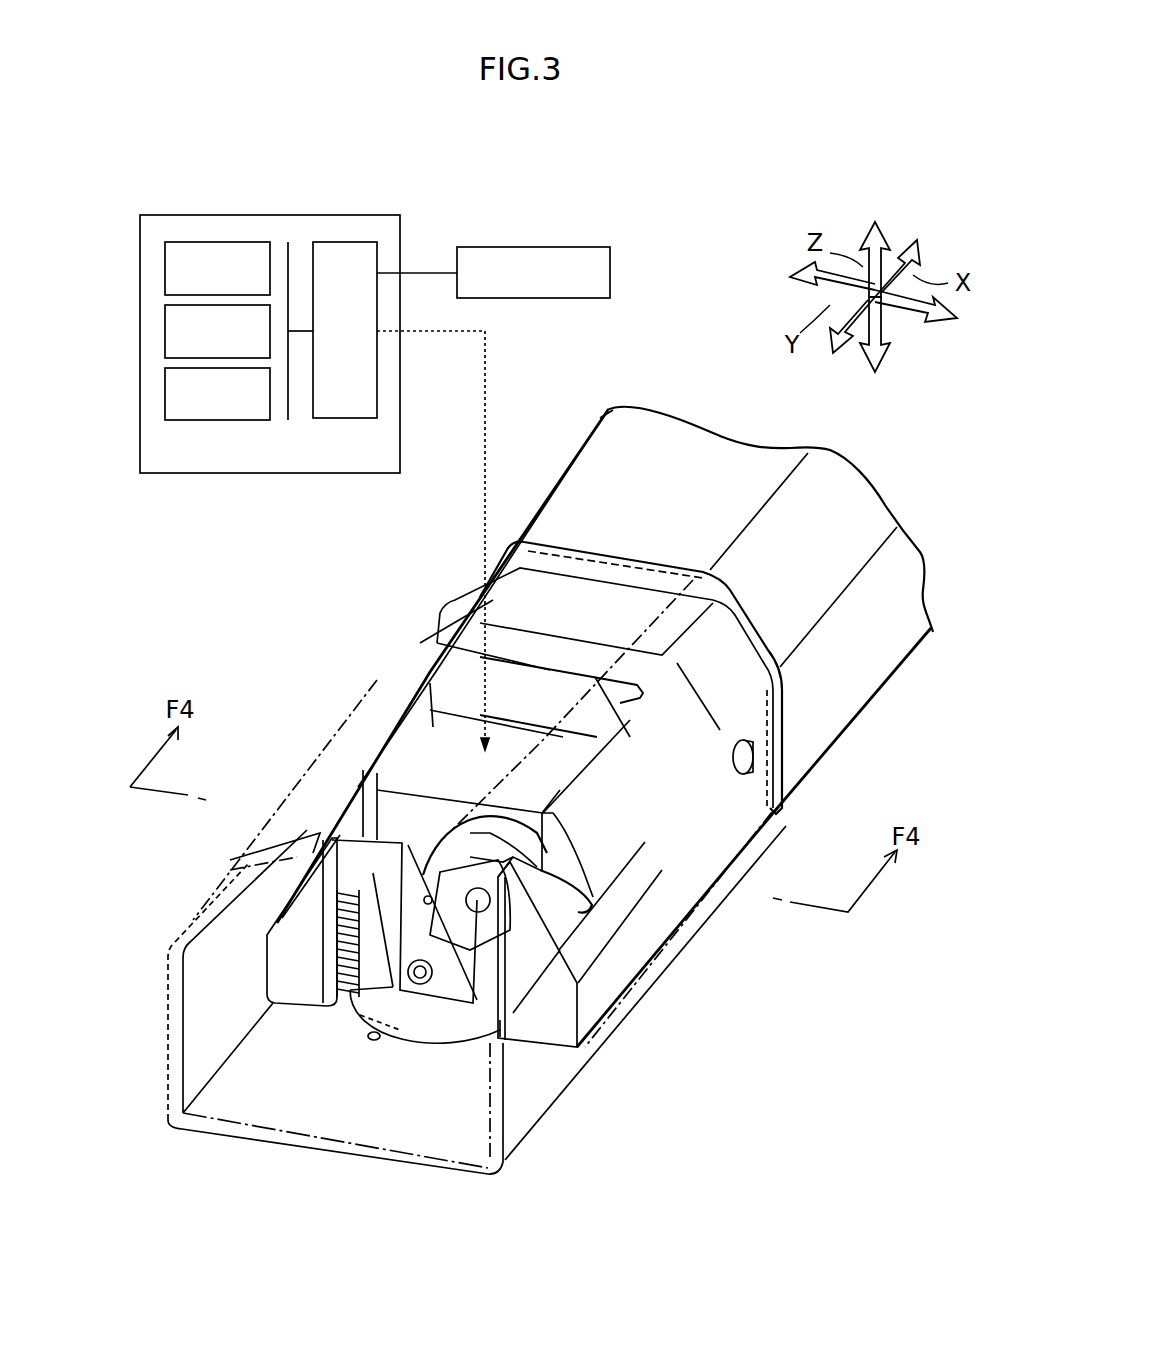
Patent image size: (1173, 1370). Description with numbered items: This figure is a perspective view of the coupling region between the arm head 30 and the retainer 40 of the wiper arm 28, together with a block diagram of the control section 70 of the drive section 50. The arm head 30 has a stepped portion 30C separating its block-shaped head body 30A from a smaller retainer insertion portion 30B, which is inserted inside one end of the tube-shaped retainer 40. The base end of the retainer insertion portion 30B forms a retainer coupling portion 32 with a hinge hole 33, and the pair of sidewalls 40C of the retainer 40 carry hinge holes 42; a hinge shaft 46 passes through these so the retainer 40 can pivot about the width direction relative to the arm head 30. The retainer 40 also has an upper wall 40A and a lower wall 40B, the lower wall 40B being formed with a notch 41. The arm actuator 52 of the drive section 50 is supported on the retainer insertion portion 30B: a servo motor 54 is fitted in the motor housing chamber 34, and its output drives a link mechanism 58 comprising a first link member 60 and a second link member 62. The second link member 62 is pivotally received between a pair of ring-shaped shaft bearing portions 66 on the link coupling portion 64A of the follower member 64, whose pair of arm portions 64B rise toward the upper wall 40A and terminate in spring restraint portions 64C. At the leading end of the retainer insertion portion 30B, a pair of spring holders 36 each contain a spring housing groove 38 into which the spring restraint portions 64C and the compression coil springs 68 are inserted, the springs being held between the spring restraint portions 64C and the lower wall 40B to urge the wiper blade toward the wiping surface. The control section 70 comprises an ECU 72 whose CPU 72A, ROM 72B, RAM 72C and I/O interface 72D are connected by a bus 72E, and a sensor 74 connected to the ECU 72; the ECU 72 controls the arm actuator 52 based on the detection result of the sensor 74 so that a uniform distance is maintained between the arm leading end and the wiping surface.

The wiper arm 28 is at (820, 783).
The arm head 30 is at (857, 722).
The head body 30A is at (870, 652).
The retainer insertion portion 30B is at (700, 910).
The stepped portion 30C is at (652, 573).
The retainer coupling portion 32 is at (580, 578).
The hinge hole 33 is at (733, 757).
The motor housing chamber 34 is at (522, 688).
The spring holders 36 is at (283, 975).
The spring housing groove 38 is at (350, 822).
The retainer 40 is at (217, 1140).
The upper wall 40A is at (380, 707).
The lower wall 40B is at (275, 1145).
The sidewalls 40C is at (170, 1040).
The notch 41 is at (374, 1045).
The hinge hole 42 is at (778, 824).
The hinge shaft 46 is at (775, 758).
The drive section 50 is at (377, 700).
The arm actuator 52 is at (357, 785).
The servo motor 54 is at (412, 762).
The link mechanism 58 is at (347, 803).
The first link member 60 is at (419, 851).
The second link member 62 is at (310, 848).
The follower member 64 is at (455, 1035).
The link coupling portion 64A is at (420, 1028).
The arm portions 64B is at (317, 940).
The spring restraint portions 64C is at (285, 858).
The shaft bearing portions 66 is at (365, 990).
The compression coil springs 68 is at (337, 908).
The control section 70 is at (250, 502).
The electronic control unit (ECU) 72 is at (177, 474).
The central processing unit (CPU) 72A is at (165, 270).
The read only memory (ROM) 72B is at (165, 331).
The random access memory (RAM) 72C is at (165, 391).
The input/output interface (I/O) 72D is at (340, 242).
The bus 72E is at (290, 260).
The sensor 74 is at (530, 247).